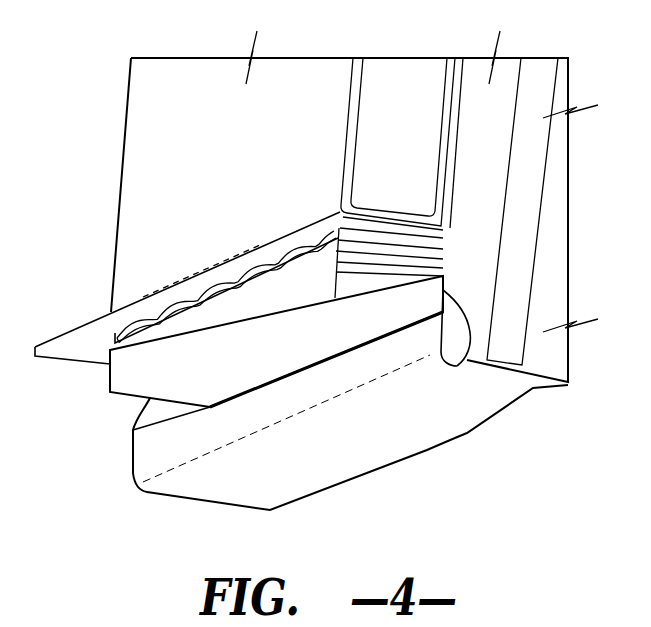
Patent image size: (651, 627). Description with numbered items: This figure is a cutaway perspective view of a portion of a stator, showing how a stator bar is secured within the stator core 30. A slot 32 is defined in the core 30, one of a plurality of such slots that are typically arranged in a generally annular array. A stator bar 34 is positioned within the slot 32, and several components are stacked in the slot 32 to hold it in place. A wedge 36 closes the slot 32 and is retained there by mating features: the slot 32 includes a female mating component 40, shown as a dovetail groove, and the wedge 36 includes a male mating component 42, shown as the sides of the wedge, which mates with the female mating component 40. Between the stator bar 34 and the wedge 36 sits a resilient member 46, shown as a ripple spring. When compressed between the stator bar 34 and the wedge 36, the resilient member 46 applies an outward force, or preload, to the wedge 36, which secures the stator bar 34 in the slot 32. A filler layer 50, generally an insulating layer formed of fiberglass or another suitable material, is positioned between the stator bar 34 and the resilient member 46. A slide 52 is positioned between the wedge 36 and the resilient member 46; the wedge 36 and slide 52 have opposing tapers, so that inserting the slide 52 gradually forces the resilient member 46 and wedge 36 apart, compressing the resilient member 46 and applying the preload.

The core 30 is at (503, 76).
The slot 32 is at (114, 418).
The stator bar 34 is at (318, 82).
The wedge 36 is at (304, 343).
The female mating component 40 is at (447, 283).
The male mating component 42 is at (458, 364).
The resilient member 46 is at (220, 277).
The filler layer 50 is at (163, 296).
The slide 52 is at (290, 270).